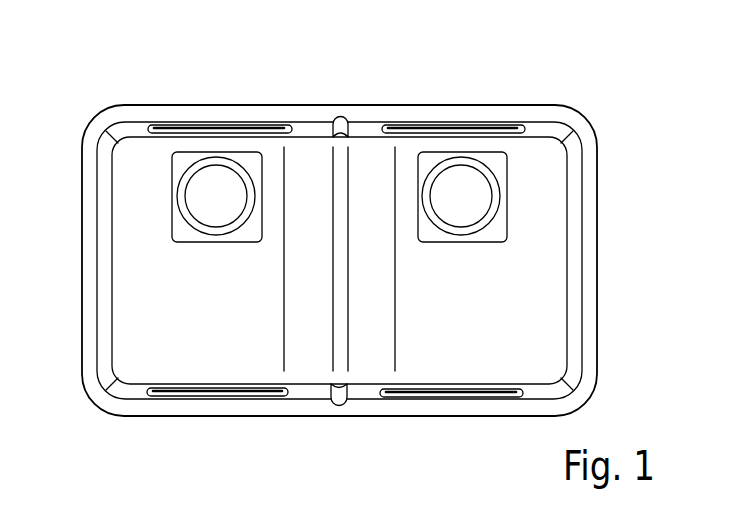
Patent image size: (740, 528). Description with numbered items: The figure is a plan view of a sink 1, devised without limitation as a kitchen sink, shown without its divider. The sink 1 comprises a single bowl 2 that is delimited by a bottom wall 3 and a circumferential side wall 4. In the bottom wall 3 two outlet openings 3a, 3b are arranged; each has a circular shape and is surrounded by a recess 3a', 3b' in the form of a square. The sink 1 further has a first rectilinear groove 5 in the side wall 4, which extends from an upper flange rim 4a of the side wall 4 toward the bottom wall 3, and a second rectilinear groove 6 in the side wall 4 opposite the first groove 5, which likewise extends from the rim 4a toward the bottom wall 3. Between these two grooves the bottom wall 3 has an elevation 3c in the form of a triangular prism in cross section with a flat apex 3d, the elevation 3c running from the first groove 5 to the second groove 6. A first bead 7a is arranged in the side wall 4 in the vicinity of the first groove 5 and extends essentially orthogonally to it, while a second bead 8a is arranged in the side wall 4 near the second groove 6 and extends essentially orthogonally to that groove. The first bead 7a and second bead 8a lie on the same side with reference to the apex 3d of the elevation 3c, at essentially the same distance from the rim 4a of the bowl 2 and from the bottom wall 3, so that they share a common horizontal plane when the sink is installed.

The sink 1 is at (577, 78).
The bowl 2 is at (550, 333).
The bottom wall 3 is at (213, 367).
The outlet opening 3a is at (219, 133).
The recess 3a' is at (238, 136).
The outlet opening 3b is at (462, 133).
The recess 3b' is at (481, 136).
The elevation 3c is at (386, 340).
The flat apex 3d is at (342, 297).
The side wall 4 is at (102, 313).
The upper flange rim 4a is at (588, 260).
The first rectilinear groove 5 is at (341, 117).
The second rectilinear groove 6 is at (338, 399).
The first bead 7a is at (169, 126).
The second bead 8a is at (172, 394).